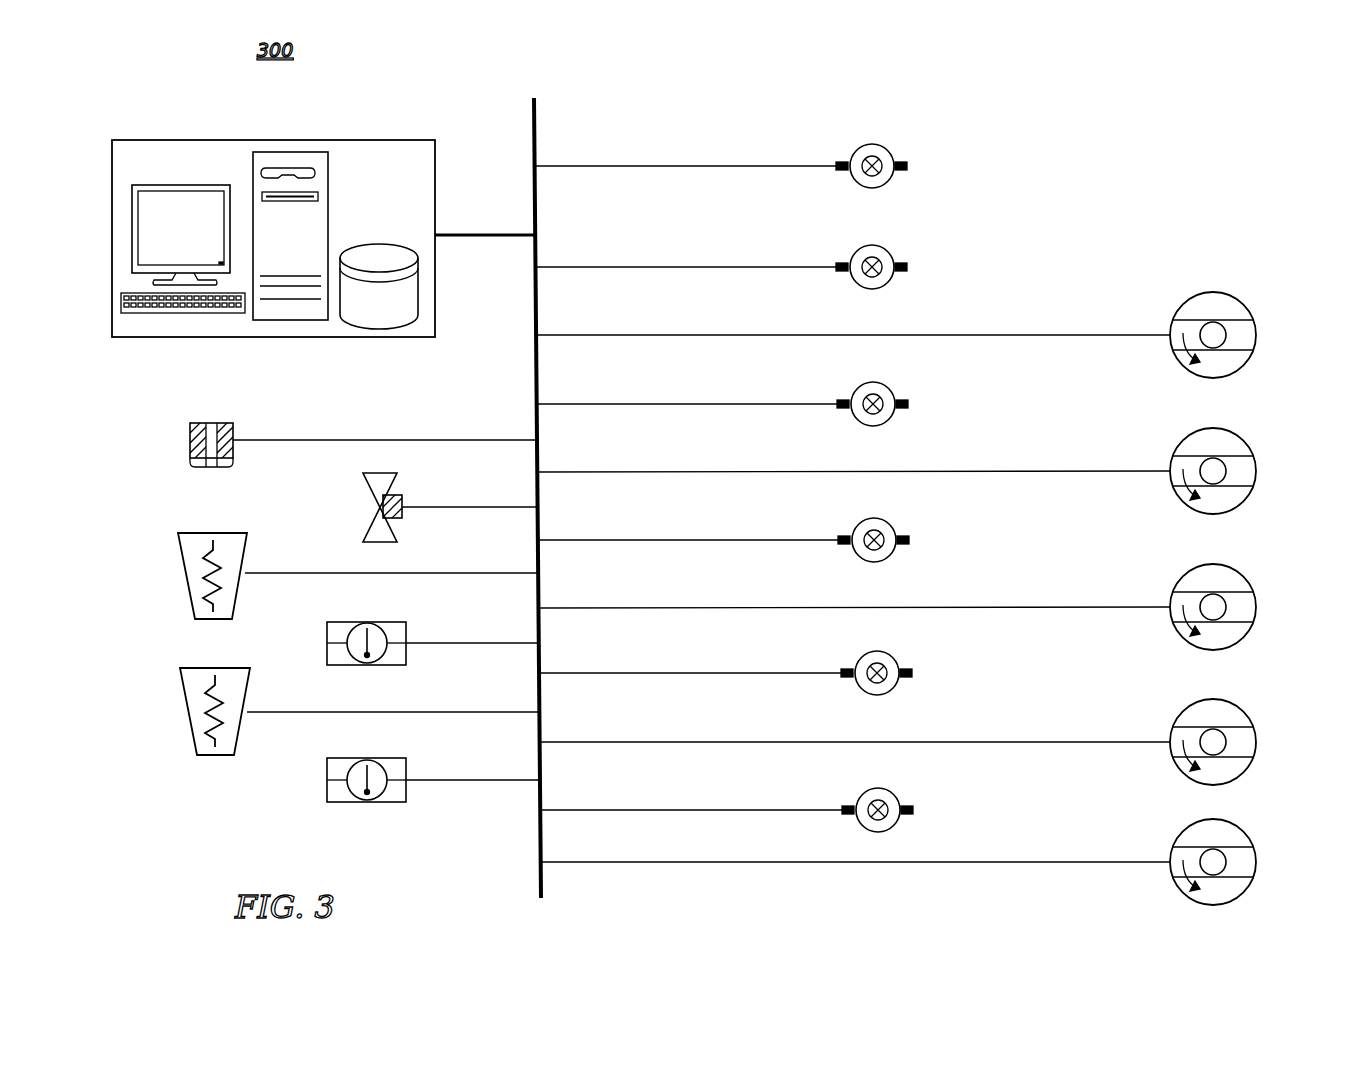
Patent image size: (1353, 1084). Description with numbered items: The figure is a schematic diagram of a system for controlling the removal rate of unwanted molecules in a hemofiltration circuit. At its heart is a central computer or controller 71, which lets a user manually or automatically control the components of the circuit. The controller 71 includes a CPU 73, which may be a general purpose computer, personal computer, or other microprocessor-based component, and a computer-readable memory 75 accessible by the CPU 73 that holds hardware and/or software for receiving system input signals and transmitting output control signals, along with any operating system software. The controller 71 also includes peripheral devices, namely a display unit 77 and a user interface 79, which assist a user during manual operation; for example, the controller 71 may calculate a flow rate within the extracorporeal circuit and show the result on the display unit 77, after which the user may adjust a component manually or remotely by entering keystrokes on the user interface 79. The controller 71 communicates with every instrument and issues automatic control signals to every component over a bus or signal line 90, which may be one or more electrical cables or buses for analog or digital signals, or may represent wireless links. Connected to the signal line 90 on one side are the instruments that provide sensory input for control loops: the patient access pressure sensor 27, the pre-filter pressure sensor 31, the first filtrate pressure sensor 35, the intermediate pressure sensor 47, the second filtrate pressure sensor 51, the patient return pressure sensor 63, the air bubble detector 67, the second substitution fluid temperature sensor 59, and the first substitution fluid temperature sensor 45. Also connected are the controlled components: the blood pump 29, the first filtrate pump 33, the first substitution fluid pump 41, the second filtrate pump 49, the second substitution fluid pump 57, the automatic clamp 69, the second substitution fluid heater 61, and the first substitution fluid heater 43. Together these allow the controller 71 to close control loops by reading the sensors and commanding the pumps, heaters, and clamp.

The bus or signal line 90 is at (537, 113).
The central computer or controller 71 is at (432, 150).
The CPU 73 is at (329, 188).
The computer-readable memory 75 is at (382, 243).
The display unit 77 is at (179, 185).
The user interface 79 is at (172, 314).
The patient access pressure sensor 27 is at (890, 150).
The pre-filter pressure sensor 31 is at (890, 251).
The first filtrate pressure sensor 35 is at (891, 388).
The intermediate pressure sensor 47 is at (892, 524).
The second filtrate pressure sensor 51 is at (895, 657).
The patient return pressure sensor 63 is at (896, 794).
The blood pump 29 is at (1245, 303).
The first filtrate pump 33 is at (1245, 439).
The first substitution fluid pump 41 is at (1245, 575).
The second filtrate pump 49 is at (1245, 710).
The second substitution fluid pump 57 is at (1245, 830).
The air bubble detector 67 is at (190, 440).
The automatic clamp 69 is at (367, 481).
The second substitution fluid heater 61 is at (182, 566).
The first substitution fluid heater 43 is at (182, 704).
The second substitution fluid temperature sensor 59 is at (327, 639).
The first substitution fluid temperature sensor 45 is at (327, 775).